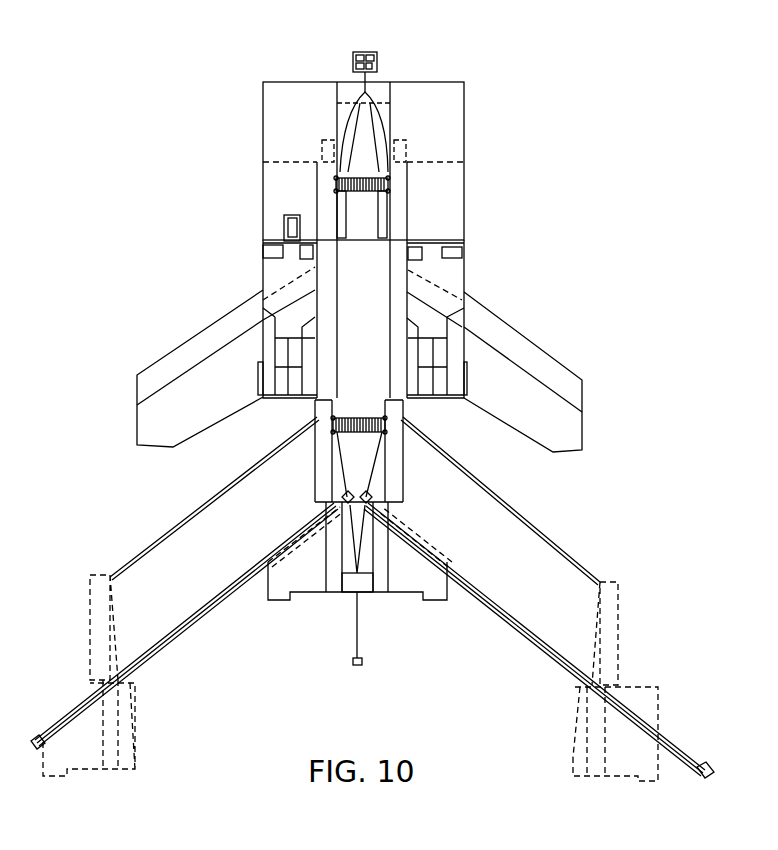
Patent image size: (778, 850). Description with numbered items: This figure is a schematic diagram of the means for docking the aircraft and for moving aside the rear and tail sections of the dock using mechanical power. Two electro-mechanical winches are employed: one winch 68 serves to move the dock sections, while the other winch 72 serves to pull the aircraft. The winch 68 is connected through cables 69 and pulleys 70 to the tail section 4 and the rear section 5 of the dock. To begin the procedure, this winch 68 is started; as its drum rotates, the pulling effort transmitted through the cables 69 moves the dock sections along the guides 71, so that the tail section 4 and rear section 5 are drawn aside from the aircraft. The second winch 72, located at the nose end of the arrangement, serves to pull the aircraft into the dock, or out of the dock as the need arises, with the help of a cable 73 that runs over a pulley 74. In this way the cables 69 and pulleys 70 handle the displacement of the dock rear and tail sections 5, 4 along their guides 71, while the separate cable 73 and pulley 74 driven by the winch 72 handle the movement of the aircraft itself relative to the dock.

The tail section 4 is at (323, 455).
The rear section 5 is at (283, 588).
The electro-mechanical winch 68 is at (703, 767).
The cables 69 is at (660, 740).
The pulleys 70 is at (337, 492).
The guides 71 is at (550, 538).
The electro-mechanical winch 72 is at (378, 60).
The cable 73 is at (370, 78).
The pulley 74 is at (362, 662).